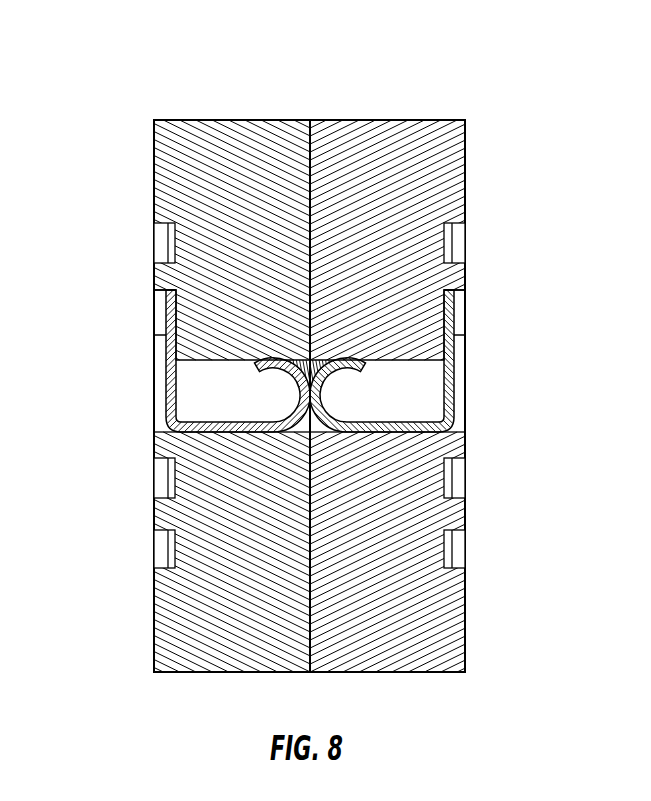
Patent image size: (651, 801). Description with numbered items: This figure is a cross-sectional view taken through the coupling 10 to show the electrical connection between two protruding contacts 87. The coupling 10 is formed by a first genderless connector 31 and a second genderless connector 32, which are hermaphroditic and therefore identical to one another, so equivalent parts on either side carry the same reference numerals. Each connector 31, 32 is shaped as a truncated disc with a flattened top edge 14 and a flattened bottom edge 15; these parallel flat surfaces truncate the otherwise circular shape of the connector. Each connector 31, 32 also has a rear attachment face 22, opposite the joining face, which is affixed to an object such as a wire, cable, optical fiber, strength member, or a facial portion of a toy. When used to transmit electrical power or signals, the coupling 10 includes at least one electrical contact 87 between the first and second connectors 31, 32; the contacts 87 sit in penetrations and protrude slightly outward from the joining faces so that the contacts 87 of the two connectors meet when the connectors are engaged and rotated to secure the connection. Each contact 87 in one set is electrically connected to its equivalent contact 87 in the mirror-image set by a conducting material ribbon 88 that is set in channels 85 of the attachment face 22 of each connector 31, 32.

The coupling 10 is at (112, 84).
The top edge 14 is at (233, 120).
The bottom edge 15 is at (230, 672).
The attachment face 22 is at (154, 362).
The first genderless connector 31 is at (154, 138).
The second genderless connector 32 is at (466, 140).
The channels 85 is at (160, 478).
The electrical contact 87 is at (318, 360).
The conducting material ribbon 88 is at (452, 243).